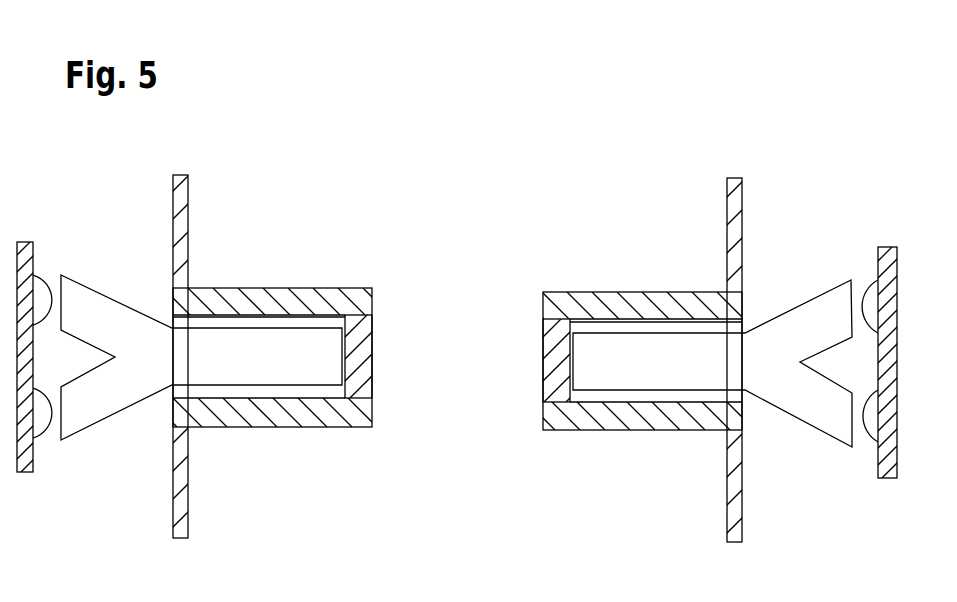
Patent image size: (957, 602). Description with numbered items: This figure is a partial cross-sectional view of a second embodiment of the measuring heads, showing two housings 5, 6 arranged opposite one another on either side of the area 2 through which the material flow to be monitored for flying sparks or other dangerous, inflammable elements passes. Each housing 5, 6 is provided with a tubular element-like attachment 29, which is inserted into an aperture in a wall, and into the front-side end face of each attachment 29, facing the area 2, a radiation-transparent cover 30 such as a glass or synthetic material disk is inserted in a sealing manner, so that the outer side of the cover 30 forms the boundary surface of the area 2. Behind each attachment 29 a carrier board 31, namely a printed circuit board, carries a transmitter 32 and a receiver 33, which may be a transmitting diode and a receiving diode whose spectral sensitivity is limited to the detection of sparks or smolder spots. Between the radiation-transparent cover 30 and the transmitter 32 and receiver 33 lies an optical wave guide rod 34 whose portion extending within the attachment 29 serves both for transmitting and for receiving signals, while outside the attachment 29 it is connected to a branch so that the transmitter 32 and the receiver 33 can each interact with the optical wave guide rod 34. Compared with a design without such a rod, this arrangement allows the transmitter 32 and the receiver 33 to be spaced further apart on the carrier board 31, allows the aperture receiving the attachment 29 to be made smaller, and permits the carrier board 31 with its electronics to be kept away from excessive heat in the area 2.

The area 2 is at (475, 375).
The housing 5 is at (175, 513).
The housing 6 is at (740, 513).
The tubular element-like attachment 29 is at (263, 300).
The radiation-transparent cover 30 is at (372, 325).
The carrier board 31 is at (33, 257).
The transmitter 32 is at (40, 292).
The receiver 33 is at (45, 423).
The optical wave guide rod 34 is at (200, 363).